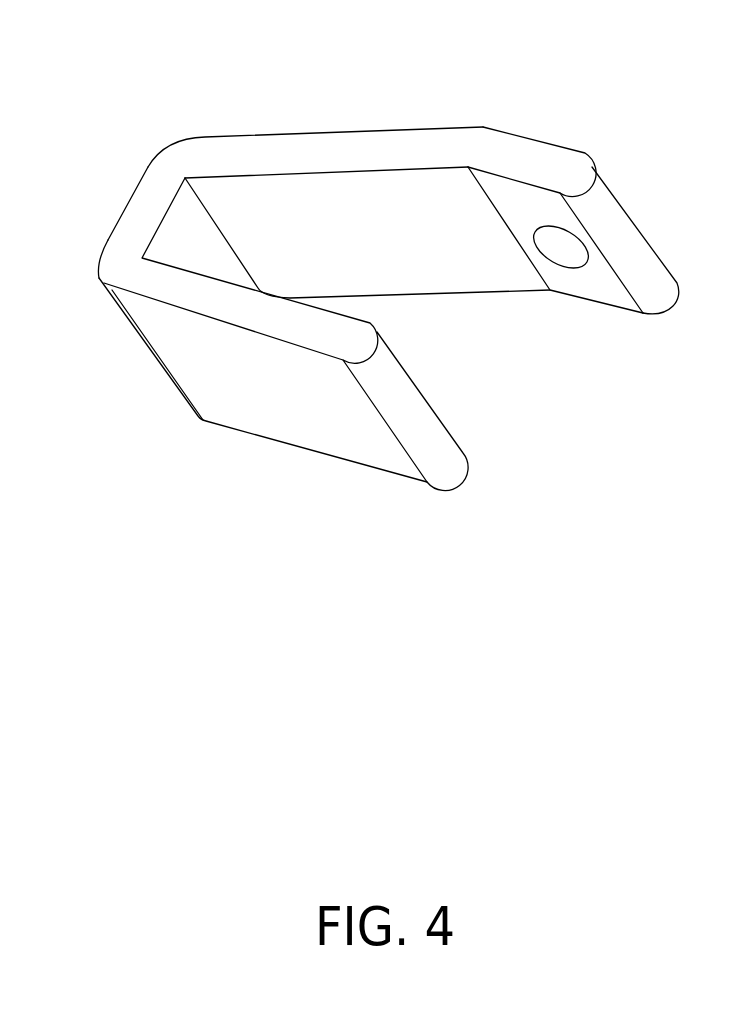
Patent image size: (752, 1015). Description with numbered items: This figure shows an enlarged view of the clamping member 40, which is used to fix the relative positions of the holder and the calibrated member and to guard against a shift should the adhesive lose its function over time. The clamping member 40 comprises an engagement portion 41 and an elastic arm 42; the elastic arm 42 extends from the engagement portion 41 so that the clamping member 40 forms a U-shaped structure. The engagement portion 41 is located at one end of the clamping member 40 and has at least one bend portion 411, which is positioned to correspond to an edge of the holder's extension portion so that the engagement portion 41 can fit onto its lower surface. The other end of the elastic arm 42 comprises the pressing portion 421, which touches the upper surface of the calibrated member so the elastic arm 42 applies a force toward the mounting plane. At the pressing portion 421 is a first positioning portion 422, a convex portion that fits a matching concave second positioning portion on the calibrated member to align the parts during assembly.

The clamping member 40 is at (157, 56).
The engagement portion 41 is at (130, 223).
The bend portion 411 is at (122, 275).
The elastic arm 42 is at (293, 150).
The pressing portion 421 is at (528, 158).
The first positioning portion 422 is at (563, 250).